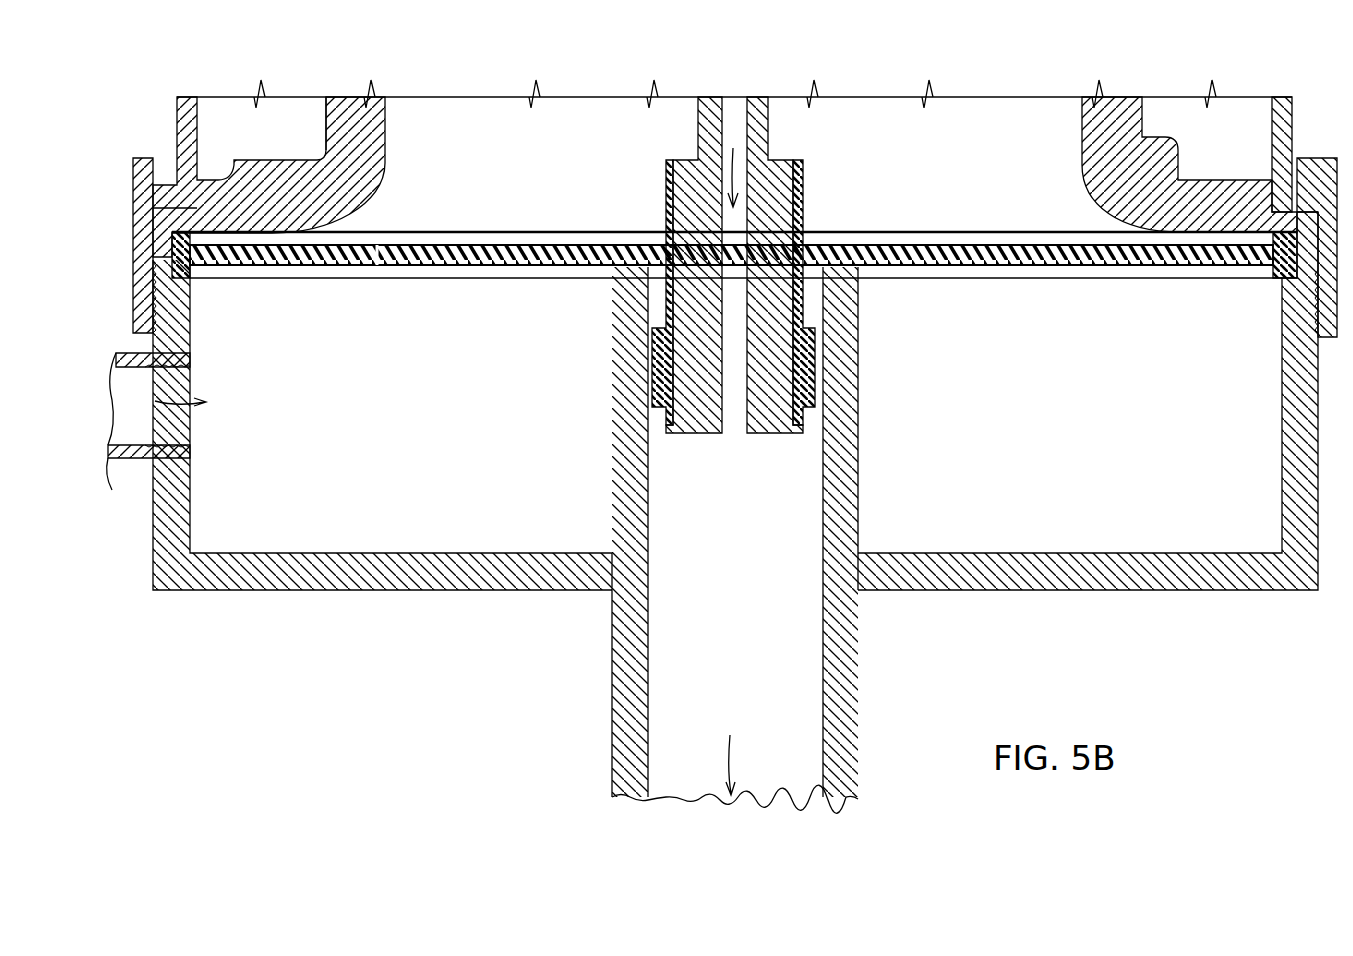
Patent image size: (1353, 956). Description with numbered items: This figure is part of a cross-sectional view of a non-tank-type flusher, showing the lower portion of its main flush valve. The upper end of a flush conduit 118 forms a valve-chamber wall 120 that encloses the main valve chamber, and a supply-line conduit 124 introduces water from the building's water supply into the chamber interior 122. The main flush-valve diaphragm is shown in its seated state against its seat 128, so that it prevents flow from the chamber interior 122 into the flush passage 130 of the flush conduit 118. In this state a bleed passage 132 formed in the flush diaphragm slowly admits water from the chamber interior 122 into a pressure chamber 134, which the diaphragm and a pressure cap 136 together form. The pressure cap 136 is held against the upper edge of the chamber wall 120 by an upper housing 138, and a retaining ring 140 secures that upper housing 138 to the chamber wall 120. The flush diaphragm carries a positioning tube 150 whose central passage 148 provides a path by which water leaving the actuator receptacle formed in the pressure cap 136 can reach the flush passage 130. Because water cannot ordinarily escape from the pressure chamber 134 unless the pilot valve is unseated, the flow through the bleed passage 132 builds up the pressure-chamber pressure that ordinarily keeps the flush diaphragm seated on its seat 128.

The flush conduit 118 is at (858, 634).
The valve-chamber wall 120 is at (1318, 408).
The main valve chamber interior 122 is at (1129, 402).
The supply-line conduit 124 is at (122, 460).
The seat 128 is at (628, 262).
The flush passage 130 is at (759, 586).
The bleed passage 132 is at (378, 247).
The pressure chamber 134 is at (496, 182).
The pressure cap 136 is at (1178, 162).
The upper housing 138 is at (1293, 137).
The retaining ring 140 is at (1328, 337).
The central passage 148 is at (733, 427).
The positioning tube 150 is at (805, 200).